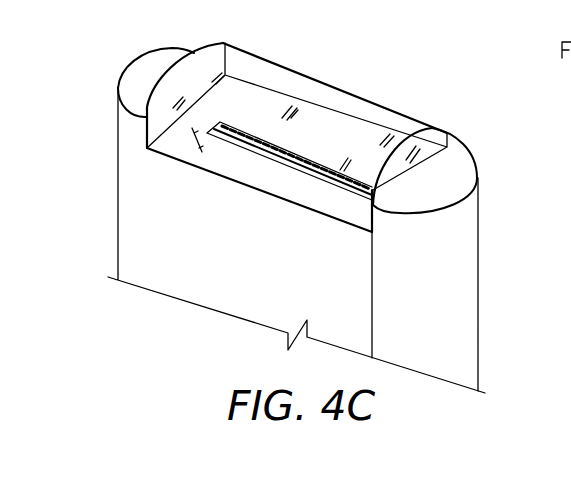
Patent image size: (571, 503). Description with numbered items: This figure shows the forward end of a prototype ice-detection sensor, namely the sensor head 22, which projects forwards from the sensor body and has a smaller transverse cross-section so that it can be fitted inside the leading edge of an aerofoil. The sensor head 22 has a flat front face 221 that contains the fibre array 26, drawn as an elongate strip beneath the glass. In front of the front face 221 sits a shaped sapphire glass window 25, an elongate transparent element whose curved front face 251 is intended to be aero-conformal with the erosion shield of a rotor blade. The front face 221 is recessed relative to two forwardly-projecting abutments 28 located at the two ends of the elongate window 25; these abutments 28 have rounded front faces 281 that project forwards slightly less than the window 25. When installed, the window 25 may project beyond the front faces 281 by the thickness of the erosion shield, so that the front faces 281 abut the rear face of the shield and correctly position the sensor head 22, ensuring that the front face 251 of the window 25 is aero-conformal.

The sensor head 22 is at (478, 267).
The front face 221 is at (245, 103).
The shaped sapphire glass window 25 is at (337, 89).
The front face of the window 251 is at (175, 63).
The fibre array 26 is at (337, 167).
The forwardly-projecting abutments 28 is at (130, 75).
The front faces of the abutments 281 is at (132, 86).